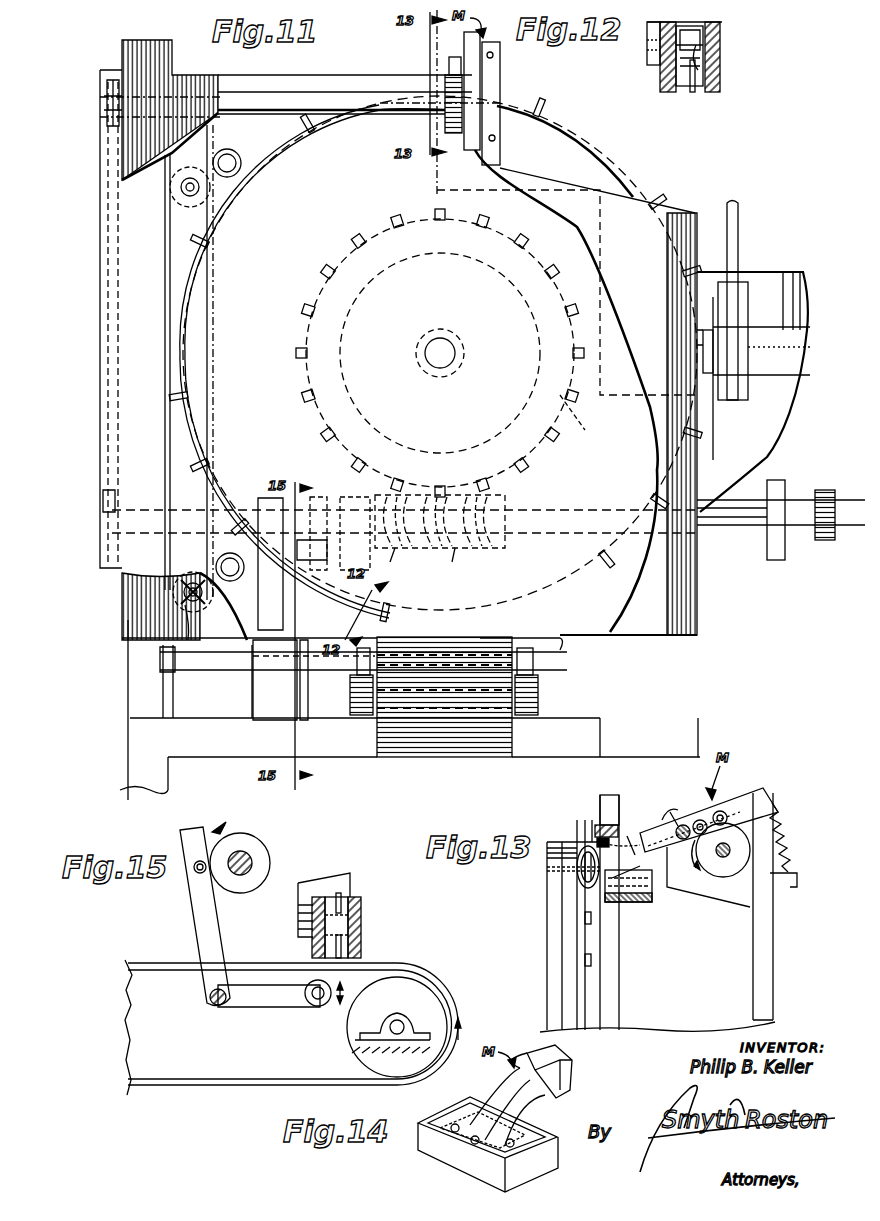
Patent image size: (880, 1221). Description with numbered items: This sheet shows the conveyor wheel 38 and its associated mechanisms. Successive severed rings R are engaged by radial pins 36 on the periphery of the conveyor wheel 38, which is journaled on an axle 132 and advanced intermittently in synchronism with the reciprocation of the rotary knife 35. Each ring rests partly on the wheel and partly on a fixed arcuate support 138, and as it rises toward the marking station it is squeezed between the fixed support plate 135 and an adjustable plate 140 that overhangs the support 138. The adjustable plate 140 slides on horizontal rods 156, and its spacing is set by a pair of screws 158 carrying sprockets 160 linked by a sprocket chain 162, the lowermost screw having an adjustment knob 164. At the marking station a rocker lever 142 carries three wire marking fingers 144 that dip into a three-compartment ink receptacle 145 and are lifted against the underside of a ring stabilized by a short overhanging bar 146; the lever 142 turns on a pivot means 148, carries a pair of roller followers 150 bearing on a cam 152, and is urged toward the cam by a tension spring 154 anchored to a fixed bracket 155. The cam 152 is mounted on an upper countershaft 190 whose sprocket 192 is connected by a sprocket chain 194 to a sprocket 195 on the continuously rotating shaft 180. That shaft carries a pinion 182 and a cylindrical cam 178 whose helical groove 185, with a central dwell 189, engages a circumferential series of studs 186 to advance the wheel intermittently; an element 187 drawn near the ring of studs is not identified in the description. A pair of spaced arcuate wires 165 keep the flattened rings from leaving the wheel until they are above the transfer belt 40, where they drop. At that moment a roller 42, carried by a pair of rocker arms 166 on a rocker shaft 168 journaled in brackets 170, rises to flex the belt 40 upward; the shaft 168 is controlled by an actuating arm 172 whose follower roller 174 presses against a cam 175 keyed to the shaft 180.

In FIG. 11, the rotary knife 35 is at (716, 432).
In FIG. 11, the radial pins 36 is at (524, 110).
In FIG. 12, the radial pins 36 is at (693, 92).
In FIG. 13, the radial pins 36 is at (600, 960).
In FIG. 15, the radial pins 36 is at (360, 900).
In FIG. 11, the conveyor wheel 38 is at (600, 166).
In FIG. 12, the conveyor wheel 38 is at (647, 55).
In FIG. 13, the conveyor wheel 38 is at (608, 1004).
In FIG. 15, the conveyor wheel 38 is at (298, 896).
In FIG. 11, the transfer belt 40 is at (418, 735).
In FIG. 15, the transfer belt 40 is at (385, 967).
In FIG. 11, the roller 42 is at (520, 640).
In FIG. 15, the roller 42 is at (318, 1006).
In FIG. 11, the axle 132 is at (448, 352).
In FIG. 12, the support plate 135 is at (720, 80).
In FIG. 13, the support plate 135 is at (620, 805).
In FIG. 15, the support plate 135 is at (361, 946).
In FIG. 13, the arcuate support 138 is at (547, 926).
In FIG. 12, the adjustable plate 140 is at (661, 82).
In FIG. 13, the adjustable plate 140 is at (576, 808).
In FIG. 15, the adjustable plate 140 is at (312, 940).
In FIG. 13, the rocker lever 142 is at (762, 780).
In FIG. 14, the rocker lever 142 is at (570, 1062).
In FIG. 13, the wire marking fingers 144 is at (630, 845).
In FIG. 14, the wire marking fingers 144 is at (560, 1100).
In FIG. 13, the receptacle 145 is at (640, 902).
In FIG. 14, the receptacle 145 is at (445, 1115).
In FIG. 13, the overhanging bar 146 is at (602, 823).
In FIG. 13, the pivot means 148 is at (683, 824).
In FIG. 13, the followers 150 is at (722, 810).
In FIG. 11, the cam 152 is at (445, 122).
In FIG. 13, the cam 152 is at (722, 877).
In FIG. 13, the tension spring 154 is at (787, 840).
In FIG. 13, the fixed bracket 155 is at (789, 888).
In FIG. 11, the horizontal rods 156 is at (232, 175).
In FIG. 11, the screws 158 is at (190, 175).
In FIG. 11, the sprockets 160 is at (165, 192).
In FIG. 11, the sprocket chain 162 is at (215, 318).
In FIG. 11, the adjustment knob 164 is at (202, 630).
In FIG. 11, the arcuate wires 165 is at (190, 470).
In FIG. 12, the arcuate wires 165 is at (690, 24).
In FIG. 11, the rocker arms 166 is at (357, 672).
In FIG. 15, the rocker arms 166 is at (248, 995).
In FIG. 11, the rocker shaft 168 is at (363, 659).
In FIG. 15, the rocker shaft 168 is at (216, 1006).
In FIG. 11, the brackets 170 is at (173, 705).
In FIG. 15, the actuating arm 172 is at (200, 915).
In FIG. 11, the roller 174 is at (325, 510).
In FIG. 15, the roller 174 is at (194, 872).
In FIG. 11, the cam 175 is at (322, 550).
In FIG. 15, the cam 175 is at (255, 860).
In FIG. 11, the cylindrical cam 178 is at (512, 500).
In FIG. 11, the shaft 180 is at (715, 526).
In FIG. 15, the shaft 180 is at (242, 836).
In FIG. 11, the pinion 182 is at (825, 540).
In FIG. 11, the helical groove 185 is at (397, 563).
In FIG. 11, the studs 186 is at (582, 420).
In FIG. 11, the tab ring 187 is at (325, 290).
In FIG. 11, the central dwell 189 is at (456, 563).
In FIG. 11, the upper countershaft 190 is at (262, 100).
In FIG. 13, the upper countershaft 190 is at (714, 850).
In FIG. 11, the sprocket 192 is at (112, 108).
In FIG. 11, the sprocket chain 194 is at (100, 380).
In FIG. 11, the sprocket 195 is at (103, 500).
In FIG. 12, the severed rings R is at (722, 32).
In FIG. 13, the severed rings R is at (577, 877).